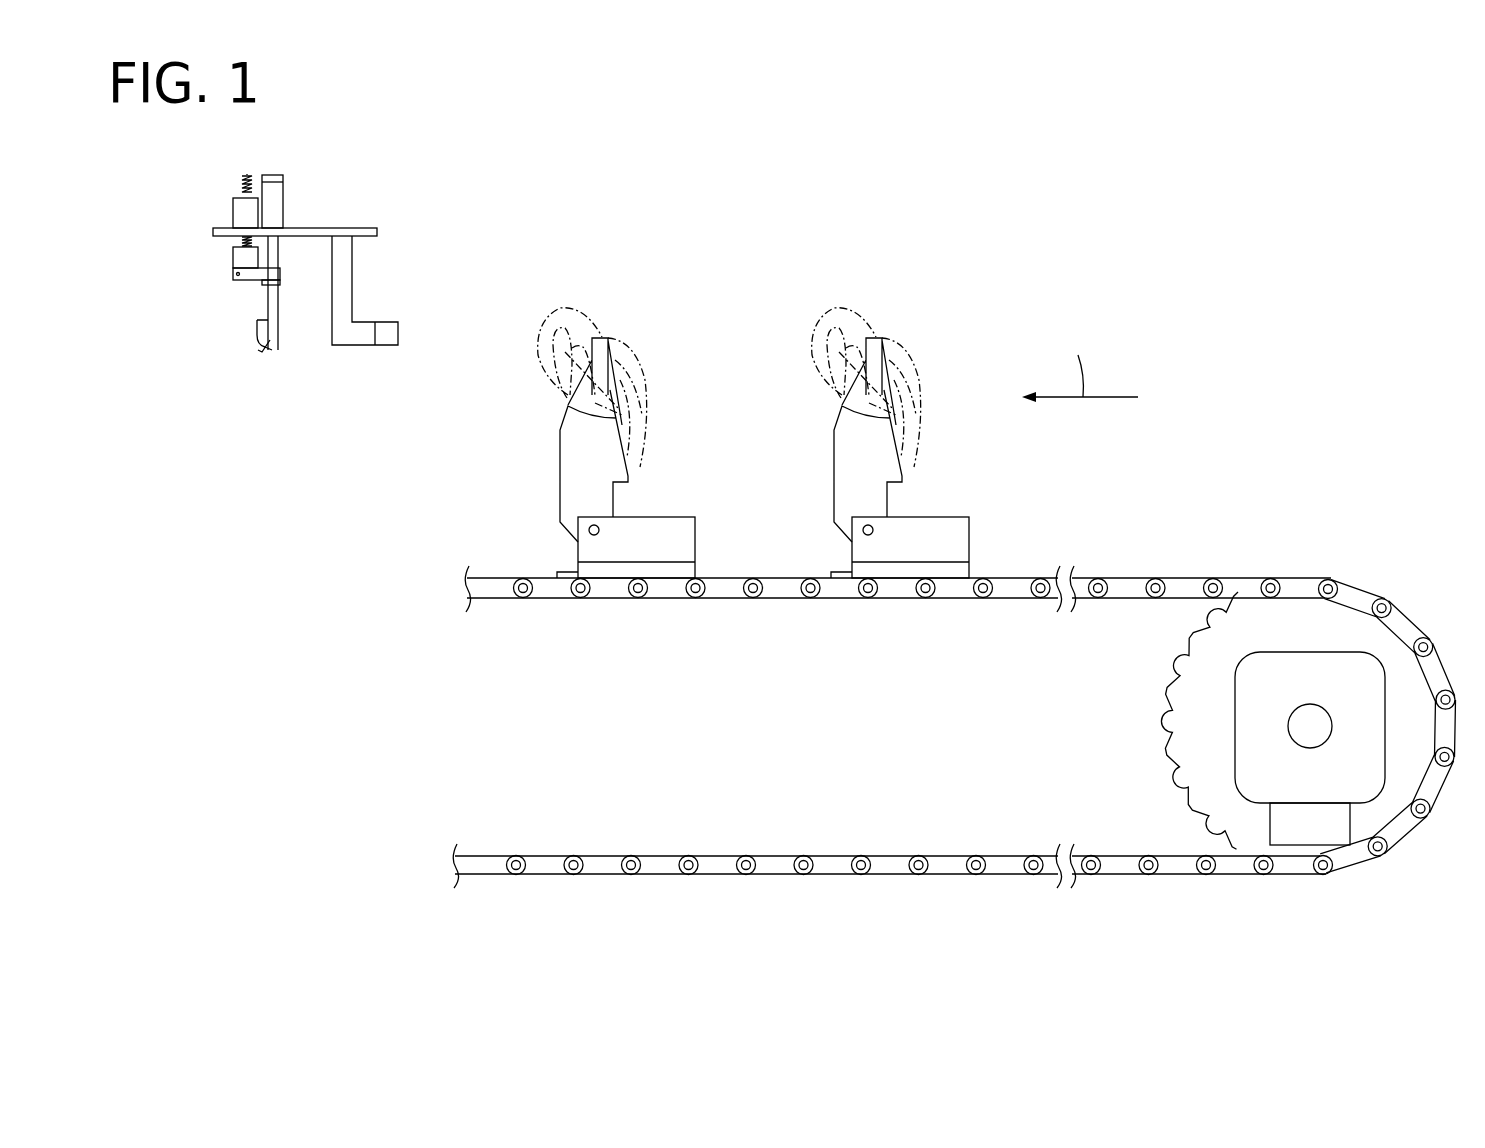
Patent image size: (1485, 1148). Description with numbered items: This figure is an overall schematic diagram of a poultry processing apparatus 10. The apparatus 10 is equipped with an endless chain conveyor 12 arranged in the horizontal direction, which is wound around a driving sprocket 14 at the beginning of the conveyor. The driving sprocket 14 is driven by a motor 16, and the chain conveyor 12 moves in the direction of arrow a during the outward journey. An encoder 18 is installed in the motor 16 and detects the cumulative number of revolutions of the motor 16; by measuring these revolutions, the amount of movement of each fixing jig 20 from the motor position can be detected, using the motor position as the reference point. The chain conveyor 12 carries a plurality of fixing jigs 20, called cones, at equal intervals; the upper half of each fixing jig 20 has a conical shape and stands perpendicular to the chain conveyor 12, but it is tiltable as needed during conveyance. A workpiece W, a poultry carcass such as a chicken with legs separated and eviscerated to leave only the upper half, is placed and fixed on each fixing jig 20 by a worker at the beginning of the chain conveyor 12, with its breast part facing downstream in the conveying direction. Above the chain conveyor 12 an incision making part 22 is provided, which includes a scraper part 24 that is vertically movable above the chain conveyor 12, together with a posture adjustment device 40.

The poultry processing apparatus 10 is at (990, 204).
The chain conveyor 12 is at (745, 577).
The driving sprocket 14 is at (1164, 693).
The motor 16 is at (1257, 752).
The encoder 18 is at (1300, 827).
The fixing jig 20 is at (559, 457).
The incision making part 22 is at (307, 242).
The scraper part 24 is at (222, 341).
The posture adjustment device 40 is at (397, 277).
The workpiece W is at (632, 352).